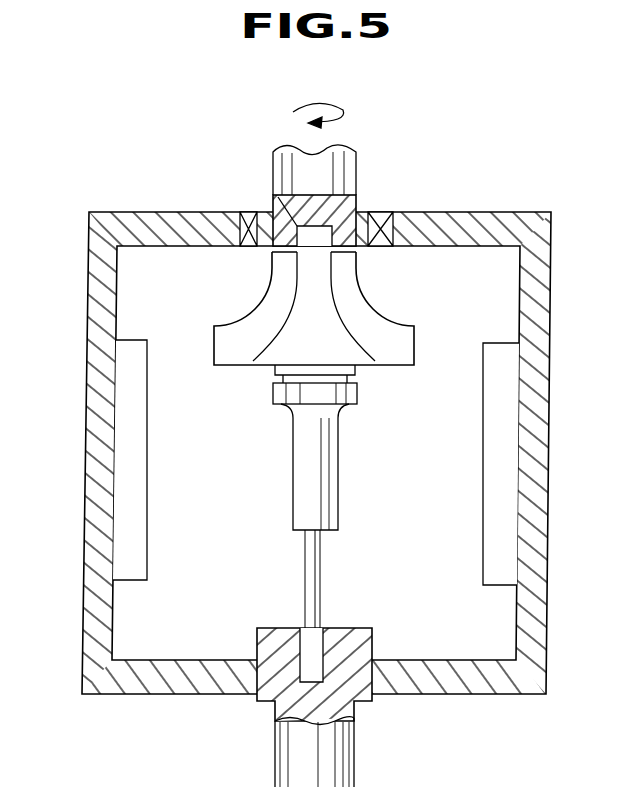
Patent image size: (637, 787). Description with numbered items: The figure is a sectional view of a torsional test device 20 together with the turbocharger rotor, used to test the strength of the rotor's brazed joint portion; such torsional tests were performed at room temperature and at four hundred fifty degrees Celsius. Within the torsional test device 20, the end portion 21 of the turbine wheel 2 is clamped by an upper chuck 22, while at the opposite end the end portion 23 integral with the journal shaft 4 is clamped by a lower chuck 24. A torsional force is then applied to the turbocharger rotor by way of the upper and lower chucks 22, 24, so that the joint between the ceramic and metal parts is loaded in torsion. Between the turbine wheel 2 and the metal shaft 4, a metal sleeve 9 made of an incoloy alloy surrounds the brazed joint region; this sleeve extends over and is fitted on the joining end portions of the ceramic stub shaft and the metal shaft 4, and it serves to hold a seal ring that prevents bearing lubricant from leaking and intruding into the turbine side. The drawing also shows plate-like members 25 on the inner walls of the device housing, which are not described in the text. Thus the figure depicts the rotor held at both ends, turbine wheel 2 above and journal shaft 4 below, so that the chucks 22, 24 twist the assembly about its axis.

The torsional test device 20 is at (495, 209).
The end portion 21 is at (297, 226).
The upper chuck 22 is at (347, 205).
The turbine wheel 2 is at (366, 305).
The metal sleeve 9 is at (285, 405).
The metal shaft 4 is at (298, 516).
The end portion 23 is at (288, 683).
The lower chuck 24 is at (363, 697).
The baffle plates 25 is at (120, 512).